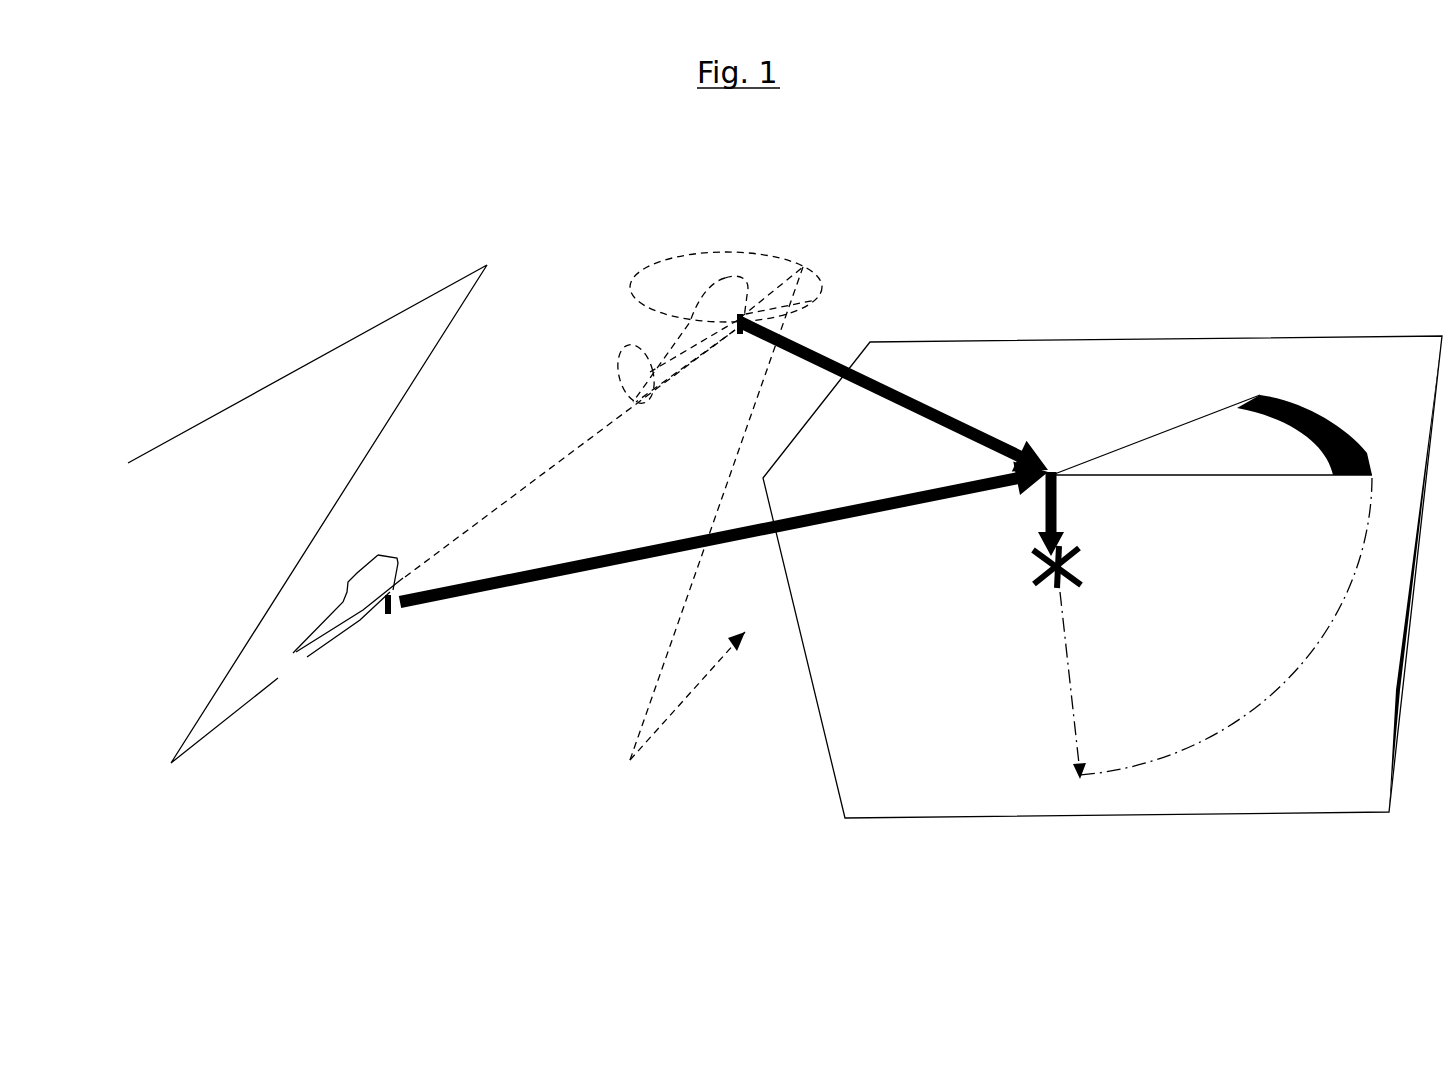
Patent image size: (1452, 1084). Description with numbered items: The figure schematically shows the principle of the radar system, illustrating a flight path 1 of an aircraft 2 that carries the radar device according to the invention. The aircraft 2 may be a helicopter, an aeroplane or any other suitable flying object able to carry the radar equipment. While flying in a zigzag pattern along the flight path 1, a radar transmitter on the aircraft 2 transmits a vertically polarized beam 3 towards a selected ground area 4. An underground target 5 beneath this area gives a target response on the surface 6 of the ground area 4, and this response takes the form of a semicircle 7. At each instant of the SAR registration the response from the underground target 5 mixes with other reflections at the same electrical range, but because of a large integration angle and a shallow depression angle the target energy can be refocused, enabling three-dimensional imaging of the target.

The flight path 1 is at (293, 360).
The aircraft 2 is at (378, 580).
The vertically polarized beam 3 is at (557, 580).
The ground area 4 is at (1031, 390).
The underground target 5 is at (1036, 596).
The surface 6 is at (1230, 443).
The semicircle 7 is at (1305, 405).